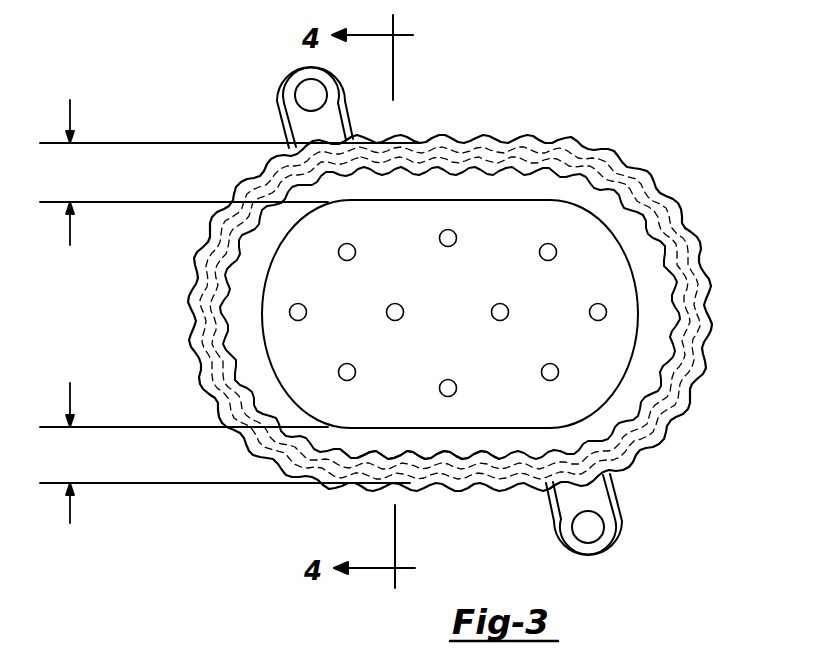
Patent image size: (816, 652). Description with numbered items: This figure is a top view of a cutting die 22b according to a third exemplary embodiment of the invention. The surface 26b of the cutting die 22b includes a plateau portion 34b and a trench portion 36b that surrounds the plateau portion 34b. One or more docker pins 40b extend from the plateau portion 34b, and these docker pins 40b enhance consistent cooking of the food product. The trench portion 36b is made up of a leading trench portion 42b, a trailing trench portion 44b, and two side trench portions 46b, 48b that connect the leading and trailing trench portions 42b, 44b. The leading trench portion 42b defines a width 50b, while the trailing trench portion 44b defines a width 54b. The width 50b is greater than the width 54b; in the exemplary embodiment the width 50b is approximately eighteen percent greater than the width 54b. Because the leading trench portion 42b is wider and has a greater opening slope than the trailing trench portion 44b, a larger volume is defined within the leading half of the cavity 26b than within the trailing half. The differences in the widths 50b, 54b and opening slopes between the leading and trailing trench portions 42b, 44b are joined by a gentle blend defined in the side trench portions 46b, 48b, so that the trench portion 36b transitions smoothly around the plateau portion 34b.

The cutting die 22b is at (172, 62).
The surface 26b is at (461, 318).
The plateau portion 34b is at (292, 337).
The trench portion 36b is at (625, 210).
The docker pins 40b is at (556, 248).
The leading trench portion 42b is at (452, 445).
The trailing trench portion 44b is at (463, 172).
The side trench portion 46b is at (237, 278).
The side trench portion 48b is at (658, 297).
The width 50b is at (70, 515).
The width 54b is at (70, 113).